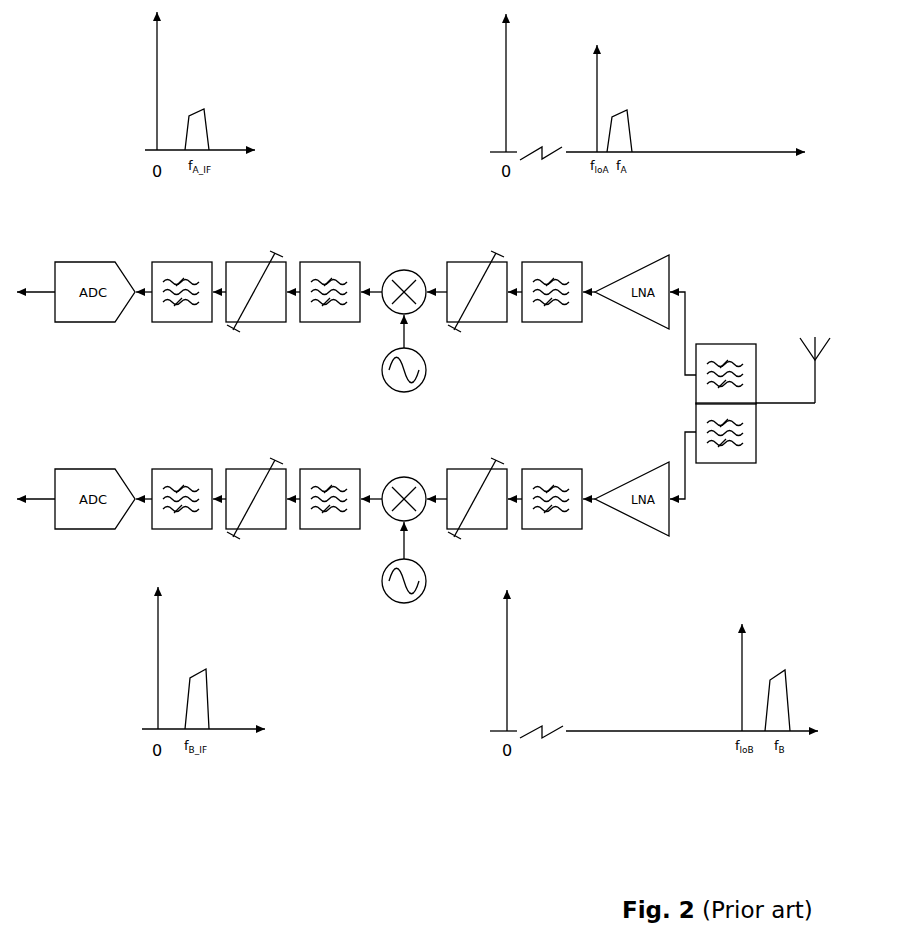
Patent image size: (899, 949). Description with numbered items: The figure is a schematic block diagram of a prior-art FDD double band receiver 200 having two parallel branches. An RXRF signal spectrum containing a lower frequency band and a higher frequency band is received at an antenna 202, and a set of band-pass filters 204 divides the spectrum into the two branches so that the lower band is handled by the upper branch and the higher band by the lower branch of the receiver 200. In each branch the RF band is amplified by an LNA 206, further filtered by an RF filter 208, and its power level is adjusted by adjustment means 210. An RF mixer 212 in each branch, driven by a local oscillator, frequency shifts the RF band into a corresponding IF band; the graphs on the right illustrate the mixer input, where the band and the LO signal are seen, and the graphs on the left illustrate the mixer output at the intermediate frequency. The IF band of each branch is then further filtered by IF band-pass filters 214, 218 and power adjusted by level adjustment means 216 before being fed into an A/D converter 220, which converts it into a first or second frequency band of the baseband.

The double band receiver 200 is at (681, 223).
The antenna 202 is at (801, 354).
The band-pass filters 204 is at (742, 388).
The LNAs 206 is at (655, 308).
The RF filters 208 is at (543, 312).
The adjustment means 210 is at (472, 313).
The RF mixers 212 is at (404, 442).
The IF band-pass filter 214 is at (330, 313).
The level adjustment means 216 is at (246, 312).
The IF band-pass filter 218 is at (173, 312).
The A/D converters 220 is at (77, 312).